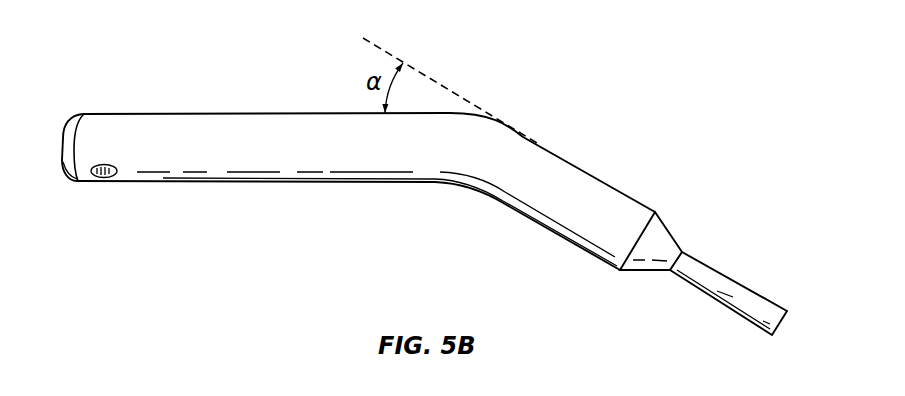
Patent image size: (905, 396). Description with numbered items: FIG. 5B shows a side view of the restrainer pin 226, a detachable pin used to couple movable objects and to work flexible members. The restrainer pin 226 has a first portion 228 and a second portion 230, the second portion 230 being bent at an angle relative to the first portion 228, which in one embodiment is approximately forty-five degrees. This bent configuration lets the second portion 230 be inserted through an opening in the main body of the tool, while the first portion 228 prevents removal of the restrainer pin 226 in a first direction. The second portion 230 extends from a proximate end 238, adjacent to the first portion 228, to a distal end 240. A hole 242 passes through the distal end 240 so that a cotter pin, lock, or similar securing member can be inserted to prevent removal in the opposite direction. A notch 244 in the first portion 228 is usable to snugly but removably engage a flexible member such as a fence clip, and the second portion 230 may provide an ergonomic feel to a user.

The restrainer pin 226 is at (150, 88).
The first portion 228 is at (565, 213).
The second portion 230 is at (192, 162).
The proximate end 238 is at (427, 163).
The distal end 240 is at (67, 148).
The hole 242 is at (105, 177).
The notch 244 is at (784, 320).